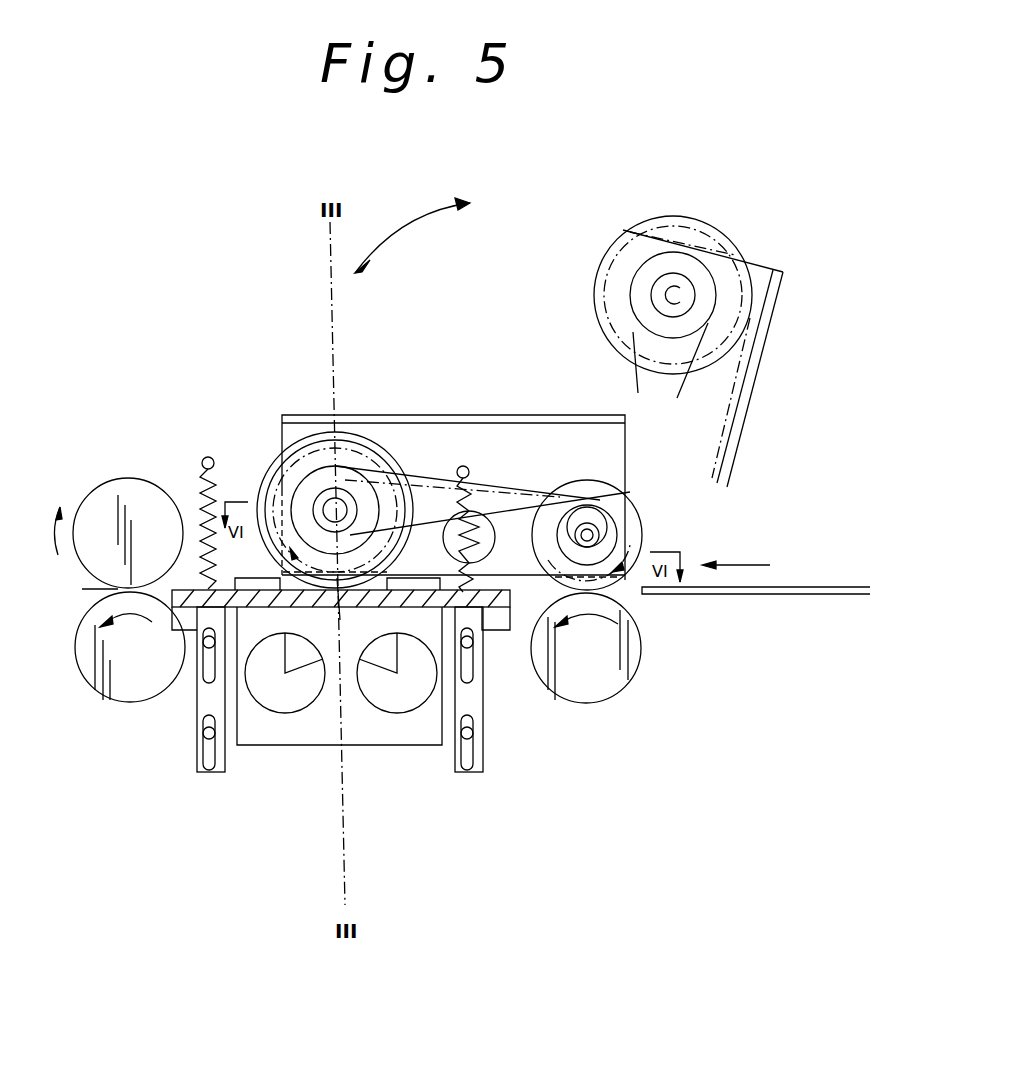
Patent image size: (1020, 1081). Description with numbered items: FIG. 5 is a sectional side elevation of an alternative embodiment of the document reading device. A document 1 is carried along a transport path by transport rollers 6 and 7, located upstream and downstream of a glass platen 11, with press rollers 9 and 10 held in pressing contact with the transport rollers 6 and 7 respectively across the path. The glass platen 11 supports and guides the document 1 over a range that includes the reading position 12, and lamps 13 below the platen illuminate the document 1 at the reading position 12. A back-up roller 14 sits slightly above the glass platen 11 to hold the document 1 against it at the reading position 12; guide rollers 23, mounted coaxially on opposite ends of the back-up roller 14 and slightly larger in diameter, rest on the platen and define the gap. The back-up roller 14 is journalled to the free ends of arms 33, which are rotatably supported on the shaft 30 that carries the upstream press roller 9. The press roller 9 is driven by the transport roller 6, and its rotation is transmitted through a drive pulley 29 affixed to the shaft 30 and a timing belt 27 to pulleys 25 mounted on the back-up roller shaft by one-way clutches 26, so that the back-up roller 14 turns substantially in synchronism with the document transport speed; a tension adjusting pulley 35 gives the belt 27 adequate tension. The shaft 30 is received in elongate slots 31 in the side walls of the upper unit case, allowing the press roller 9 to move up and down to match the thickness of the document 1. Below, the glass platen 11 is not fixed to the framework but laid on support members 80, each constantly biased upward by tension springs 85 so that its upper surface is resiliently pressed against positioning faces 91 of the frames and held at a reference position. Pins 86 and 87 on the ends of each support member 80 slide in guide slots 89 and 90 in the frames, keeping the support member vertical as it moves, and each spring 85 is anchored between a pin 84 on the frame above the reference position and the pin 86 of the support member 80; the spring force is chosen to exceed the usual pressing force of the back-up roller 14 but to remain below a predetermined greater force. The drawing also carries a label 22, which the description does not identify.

The document 1 is at (783, 597).
The transport roller 6 is at (640, 645).
The transport roller 7 is at (128, 702).
The press roller 9 is at (587, 480).
The press roller 10 is at (125, 480).
The glass platen 11 is at (283, 607).
The reading position 12 is at (350, 608).
The lamps 13 is at (297, 713).
The back-up roller 14 is at (317, 440).
The shaft 22 is at (342, 757).
The guide rollers 23 is at (373, 433).
The pulleys 25 is at (290, 467).
The one-way clutches 26 is at (312, 505).
The timing belt 27 is at (447, 478).
The drive pulley 29 is at (610, 515).
The shaft 30 is at (530, 548).
The elongate slots 31 is at (597, 507).
The arms 33 is at (543, 415).
The tension adjusting pulley 35 is at (507, 523).
The support members 80 is at (225, 745).
The pin 84 is at (207, 457).
The tension spring 85 is at (205, 500).
The pins 86 is at (204, 648).
The pins 87 is at (204, 736).
The guide slots 89 is at (196, 690).
The guide slots 90 is at (213, 770).
The positioning faces 91 is at (508, 588).